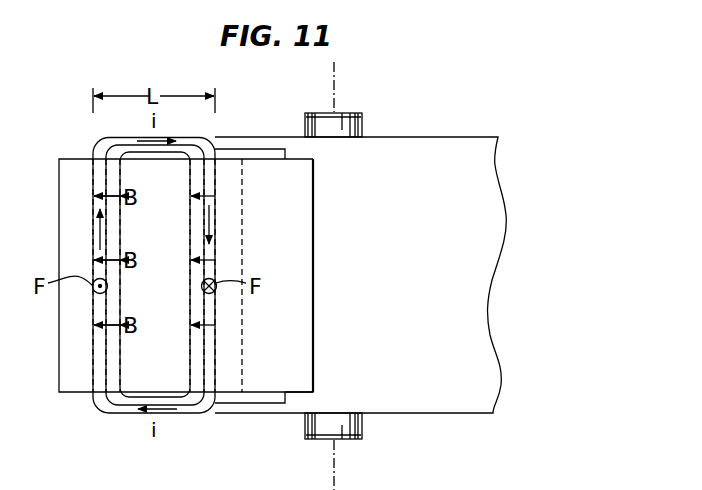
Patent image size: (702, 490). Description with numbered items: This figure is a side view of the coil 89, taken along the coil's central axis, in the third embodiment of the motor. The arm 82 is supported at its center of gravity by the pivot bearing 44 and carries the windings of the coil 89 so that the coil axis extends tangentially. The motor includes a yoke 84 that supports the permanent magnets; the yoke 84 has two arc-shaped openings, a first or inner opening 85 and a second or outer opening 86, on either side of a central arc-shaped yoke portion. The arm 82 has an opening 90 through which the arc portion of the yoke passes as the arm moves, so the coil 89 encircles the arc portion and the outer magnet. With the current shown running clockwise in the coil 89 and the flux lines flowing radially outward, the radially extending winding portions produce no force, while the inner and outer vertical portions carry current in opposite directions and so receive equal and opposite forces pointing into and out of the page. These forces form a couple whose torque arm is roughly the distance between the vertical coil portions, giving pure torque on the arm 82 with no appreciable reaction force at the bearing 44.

The arm 82 is at (441, 124).
The pivot bearing 44 is at (350, 112).
The second or outer opening 86 is at (91, 175).
The coil 89 is at (119, 139).
The opening 90 is at (245, 147).
The first or inner opening 85 is at (243, 187).
The yoke 84 is at (293, 372).